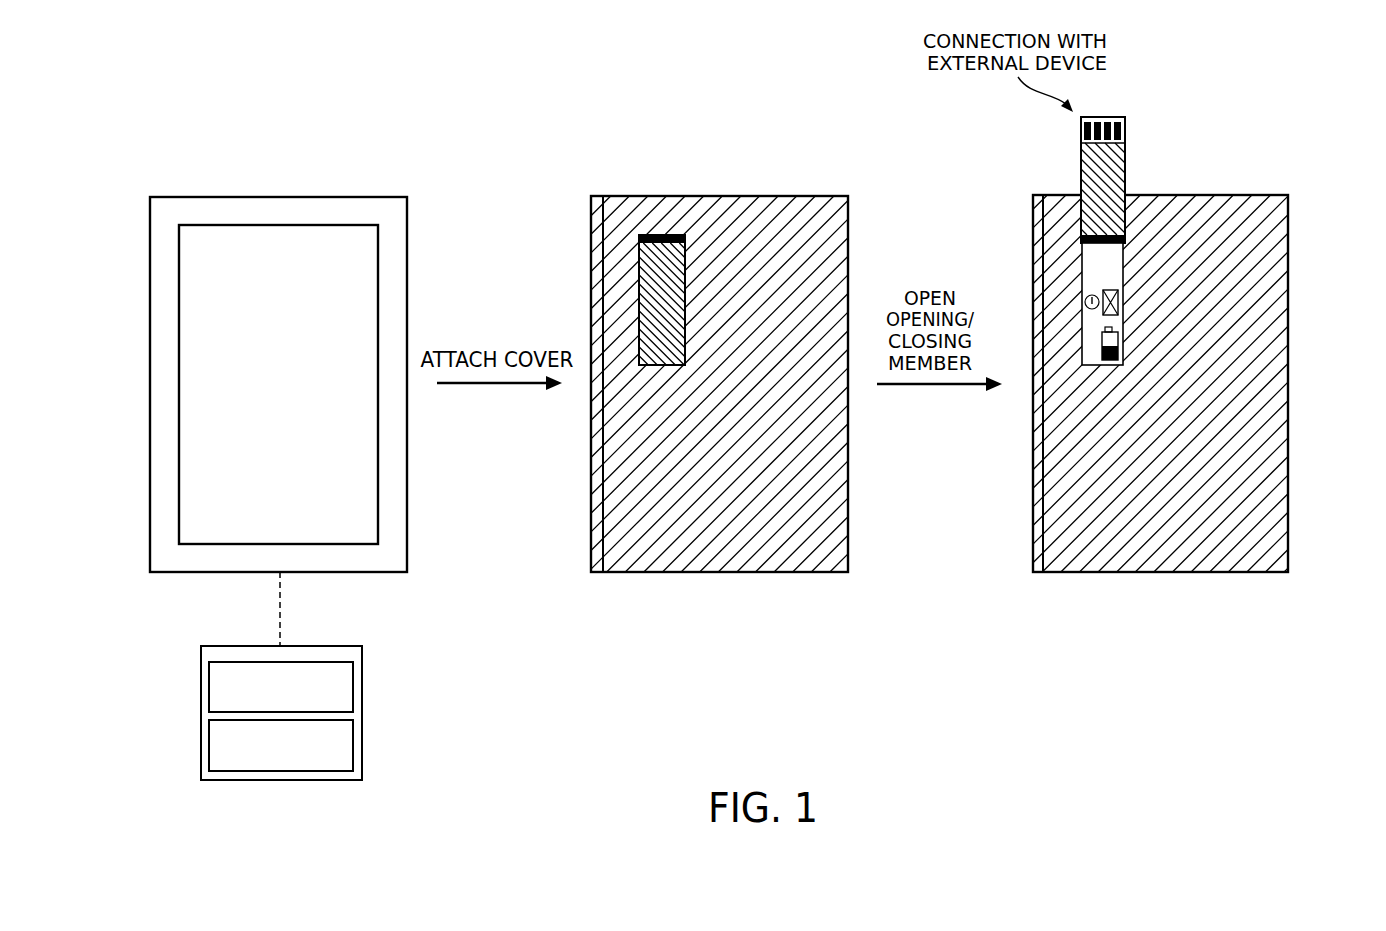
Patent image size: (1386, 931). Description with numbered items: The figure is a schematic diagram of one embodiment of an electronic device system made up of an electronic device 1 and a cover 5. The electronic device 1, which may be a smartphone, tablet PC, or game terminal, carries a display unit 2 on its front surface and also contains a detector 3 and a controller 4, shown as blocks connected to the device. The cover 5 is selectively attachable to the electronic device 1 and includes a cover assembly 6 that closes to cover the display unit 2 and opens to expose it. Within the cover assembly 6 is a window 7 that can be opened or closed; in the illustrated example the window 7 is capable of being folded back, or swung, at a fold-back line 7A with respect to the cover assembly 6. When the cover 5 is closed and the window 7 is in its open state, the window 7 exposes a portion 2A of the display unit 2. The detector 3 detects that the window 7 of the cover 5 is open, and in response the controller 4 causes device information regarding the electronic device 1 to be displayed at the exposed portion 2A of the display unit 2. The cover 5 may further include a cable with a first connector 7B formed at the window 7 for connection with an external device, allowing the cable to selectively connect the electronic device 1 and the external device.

The electronic device 1 is at (216, 170).
The display unit 2 is at (343, 245).
The portion of the display unit 2A is at (1095, 320).
The detector 3 is at (362, 687).
The controller 4 is at (362, 745).
The cover 5 is at (941, 348).
The cover assembly 6 is at (723, 573).
The window 7 is at (638, 277).
The fold-back line 7A is at (665, 236).
The first connector 7B is at (1100, 118).